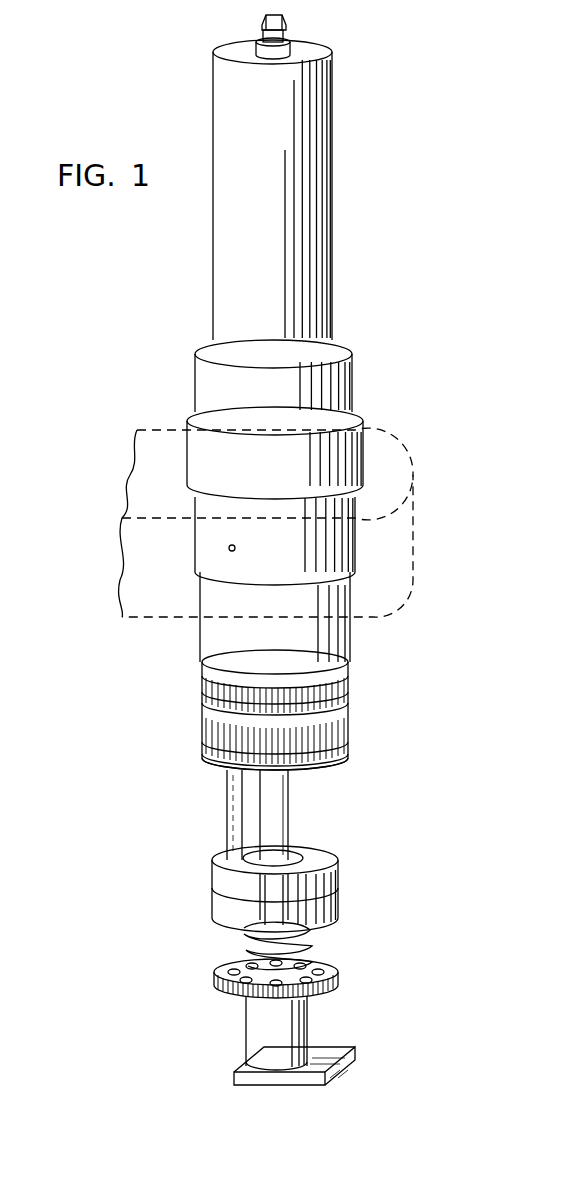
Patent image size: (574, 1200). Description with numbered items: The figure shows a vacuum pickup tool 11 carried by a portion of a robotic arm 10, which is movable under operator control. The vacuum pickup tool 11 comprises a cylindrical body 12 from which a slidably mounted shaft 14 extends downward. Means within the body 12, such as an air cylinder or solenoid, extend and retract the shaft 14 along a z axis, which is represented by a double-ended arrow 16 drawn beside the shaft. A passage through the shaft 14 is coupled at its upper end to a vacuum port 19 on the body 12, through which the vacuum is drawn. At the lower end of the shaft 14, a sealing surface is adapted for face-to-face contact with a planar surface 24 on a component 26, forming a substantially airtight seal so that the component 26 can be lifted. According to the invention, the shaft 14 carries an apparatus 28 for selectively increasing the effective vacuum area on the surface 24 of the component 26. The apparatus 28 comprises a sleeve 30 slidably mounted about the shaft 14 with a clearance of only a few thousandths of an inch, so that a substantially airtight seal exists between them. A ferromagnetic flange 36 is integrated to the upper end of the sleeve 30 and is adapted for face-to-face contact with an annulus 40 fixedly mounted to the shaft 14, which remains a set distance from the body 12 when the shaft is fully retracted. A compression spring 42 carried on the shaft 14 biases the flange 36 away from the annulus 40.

The robotic arm 10 is at (405, 536).
The vacuum pickup tool 11 is at (434, 384).
The cylindrical body 12 is at (365, 455).
The shaft 14 is at (290, 806).
The double-ended arrow 16 is at (208, 785).
The vacuum port 19 is at (228, 548).
The planar surface 24 is at (320, 1064).
The component 26 is at (400, 1090).
The apparatus 28 is at (346, 852).
The sleeve 30 is at (251, 1037).
The ferromagnetic flange 36 is at (214, 982).
The annulus 40 is at (216, 905).
The compression spring 42 is at (246, 940).